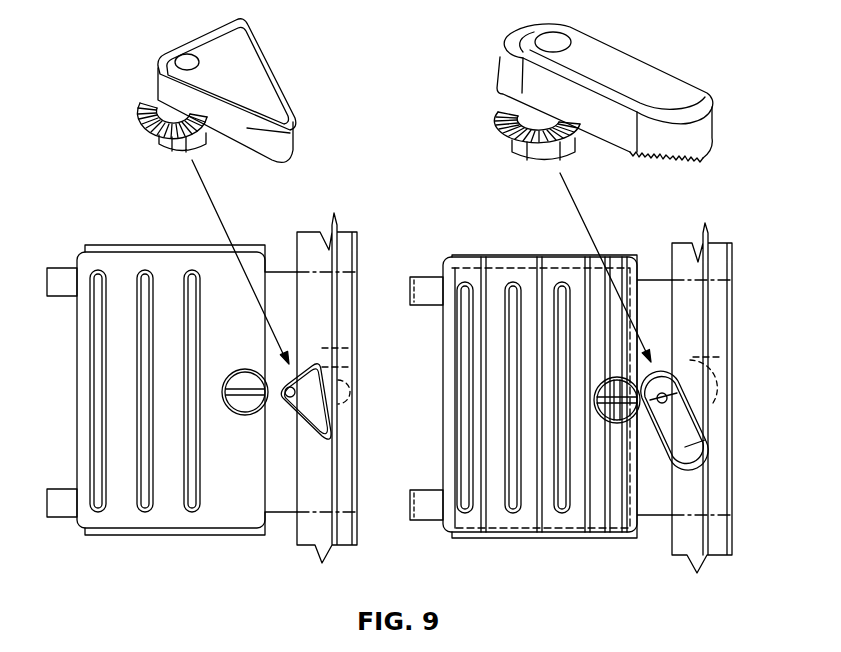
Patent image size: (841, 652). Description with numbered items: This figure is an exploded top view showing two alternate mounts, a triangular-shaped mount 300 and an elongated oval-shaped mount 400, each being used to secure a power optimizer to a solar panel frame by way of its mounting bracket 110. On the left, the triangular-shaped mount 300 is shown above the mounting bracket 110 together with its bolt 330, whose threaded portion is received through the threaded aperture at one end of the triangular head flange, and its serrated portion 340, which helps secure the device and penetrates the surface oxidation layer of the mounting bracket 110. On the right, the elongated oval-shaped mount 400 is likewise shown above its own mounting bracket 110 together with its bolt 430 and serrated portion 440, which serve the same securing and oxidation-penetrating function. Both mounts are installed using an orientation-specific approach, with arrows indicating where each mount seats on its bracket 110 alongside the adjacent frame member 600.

The mounting bracket 110 is at (102, 533).
The triangular-shaped mount 300 is at (185, 30).
The bolt 330 is at (163, 147).
The serrated portion 340 is at (146, 110).
The elongated oval-shaped mount 400 is at (671, 50).
The bolt 430 is at (530, 160).
The serrated portion 440 is at (500, 114).
The support post 600 is at (343, 308).